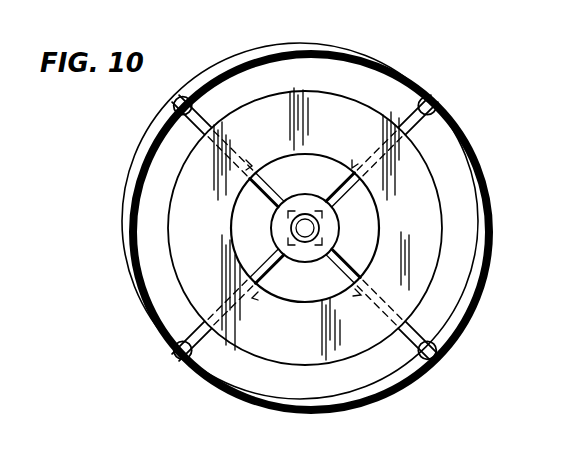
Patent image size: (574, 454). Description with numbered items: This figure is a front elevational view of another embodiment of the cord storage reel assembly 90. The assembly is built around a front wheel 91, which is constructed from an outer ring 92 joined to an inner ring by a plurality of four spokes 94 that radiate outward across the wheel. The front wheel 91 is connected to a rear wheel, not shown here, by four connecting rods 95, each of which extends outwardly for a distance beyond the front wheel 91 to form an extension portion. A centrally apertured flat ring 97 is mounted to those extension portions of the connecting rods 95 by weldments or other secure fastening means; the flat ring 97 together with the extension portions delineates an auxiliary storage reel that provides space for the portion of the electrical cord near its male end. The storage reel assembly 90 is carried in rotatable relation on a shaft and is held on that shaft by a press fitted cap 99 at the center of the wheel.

The cord storage reel assembly 90 is at (282, 217).
The front wheel 91 is at (335, 45).
The outer ring 92 is at (132, 272).
The spokes 94 is at (441, 117).
The connecting rods 95 is at (222, 202).
The flat ring 97 is at (176, 172).
The press fitted cap 99 is at (305, 228).